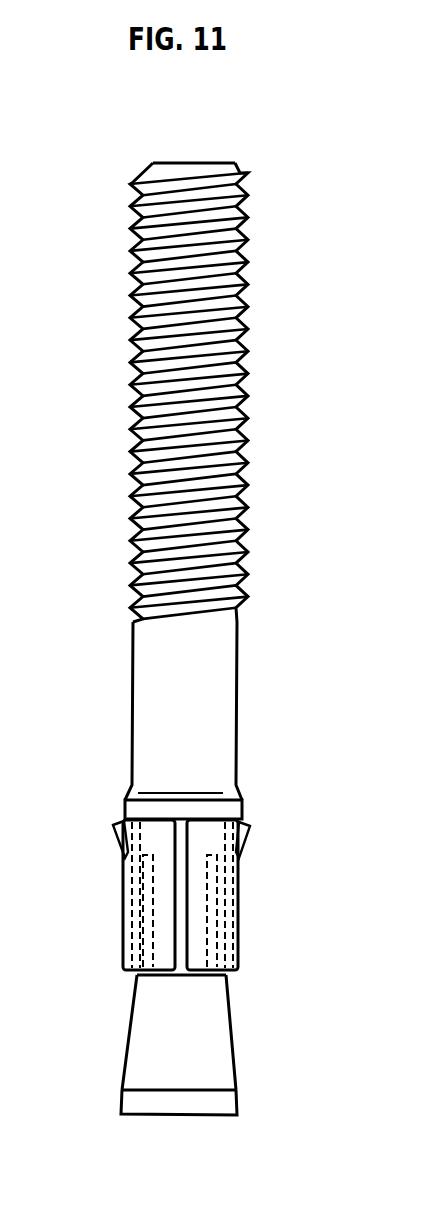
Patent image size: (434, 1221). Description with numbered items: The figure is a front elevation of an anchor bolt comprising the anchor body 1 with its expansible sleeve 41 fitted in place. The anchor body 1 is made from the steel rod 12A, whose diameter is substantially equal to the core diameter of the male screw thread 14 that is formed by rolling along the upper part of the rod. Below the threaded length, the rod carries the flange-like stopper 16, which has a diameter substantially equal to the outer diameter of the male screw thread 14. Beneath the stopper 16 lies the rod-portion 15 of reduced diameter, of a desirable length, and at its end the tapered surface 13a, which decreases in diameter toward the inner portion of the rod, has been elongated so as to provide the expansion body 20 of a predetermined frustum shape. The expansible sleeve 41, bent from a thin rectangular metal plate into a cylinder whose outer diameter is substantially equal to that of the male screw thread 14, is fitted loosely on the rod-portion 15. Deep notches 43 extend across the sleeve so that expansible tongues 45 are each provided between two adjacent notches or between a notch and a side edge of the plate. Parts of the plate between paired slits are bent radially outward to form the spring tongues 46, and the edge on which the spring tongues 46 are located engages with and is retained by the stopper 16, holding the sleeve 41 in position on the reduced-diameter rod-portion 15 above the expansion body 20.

The anchor body 1 is at (256, 603).
The male screw thread 14 is at (239, 375).
The steel rod 12A is at (220, 700).
The stopper 16 is at (233, 808).
The rod-portion of reduced diameter 15 is at (236, 872).
The expansible sleeve 41 is at (163, 836).
The deep notches 43 is at (232, 900).
The expansible tongues 45 is at (238, 937).
The spring tongues 46 is at (113, 835).
The expansion body 20 is at (218, 1048).
The tapered surface 13a is at (128, 1040).